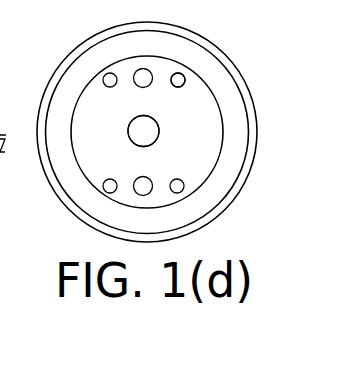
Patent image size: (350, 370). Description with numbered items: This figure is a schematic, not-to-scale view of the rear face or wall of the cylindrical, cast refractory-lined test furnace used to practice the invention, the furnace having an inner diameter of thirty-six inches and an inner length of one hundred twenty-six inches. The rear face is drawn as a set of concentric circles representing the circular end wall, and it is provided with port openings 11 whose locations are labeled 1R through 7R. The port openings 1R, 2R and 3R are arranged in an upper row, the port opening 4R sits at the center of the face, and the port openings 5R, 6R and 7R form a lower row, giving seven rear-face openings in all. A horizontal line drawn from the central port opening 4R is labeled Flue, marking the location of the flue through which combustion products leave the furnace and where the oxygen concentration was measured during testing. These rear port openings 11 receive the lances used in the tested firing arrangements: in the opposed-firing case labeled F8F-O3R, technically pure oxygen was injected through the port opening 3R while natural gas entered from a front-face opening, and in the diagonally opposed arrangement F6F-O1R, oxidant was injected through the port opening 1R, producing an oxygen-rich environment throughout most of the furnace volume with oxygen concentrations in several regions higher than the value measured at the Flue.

The port openings 11 is at (181, 76).
The rear face port opening 1R is at (108, 91).
The rear face port opening 2R is at (143, 90).
The rear face port opening 3R is at (180, 91).
The rear face port opening 4R is at (129, 131).
The rear face port opening 5R is at (110, 175).
The rear face port opening 6R is at (143, 176).
The rear face port opening 7R is at (178, 175).
The flue Flue is at (159, 131).